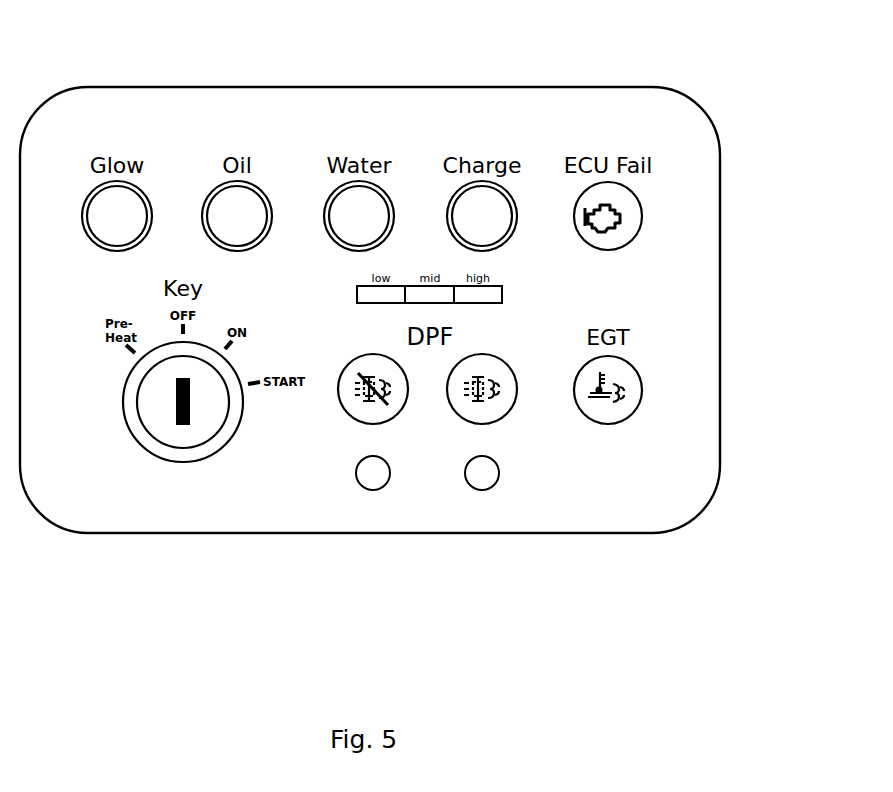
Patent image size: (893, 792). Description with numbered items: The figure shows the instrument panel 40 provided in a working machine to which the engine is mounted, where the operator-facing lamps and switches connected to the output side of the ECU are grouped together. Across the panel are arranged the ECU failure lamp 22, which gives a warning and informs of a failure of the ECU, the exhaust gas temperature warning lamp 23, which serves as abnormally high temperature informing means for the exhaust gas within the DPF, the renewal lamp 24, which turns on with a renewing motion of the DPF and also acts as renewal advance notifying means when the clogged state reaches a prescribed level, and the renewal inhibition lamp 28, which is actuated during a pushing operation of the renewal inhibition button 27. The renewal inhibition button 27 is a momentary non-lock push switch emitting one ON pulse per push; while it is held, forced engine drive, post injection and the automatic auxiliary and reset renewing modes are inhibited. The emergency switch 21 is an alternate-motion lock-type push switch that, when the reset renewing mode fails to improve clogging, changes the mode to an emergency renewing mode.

The instrument panel 40 is at (167, 110).
The ECU failure lamp 22 is at (640, 227).
The exhaust gas temperature warning lamp 23 is at (632, 407).
The renewal lamp 24 is at (487, 372).
The renewal inhibition lamp 28 is at (377, 363).
The renewal inhibition button 27 is at (368, 473).
The emergency switch 21 is at (493, 477).